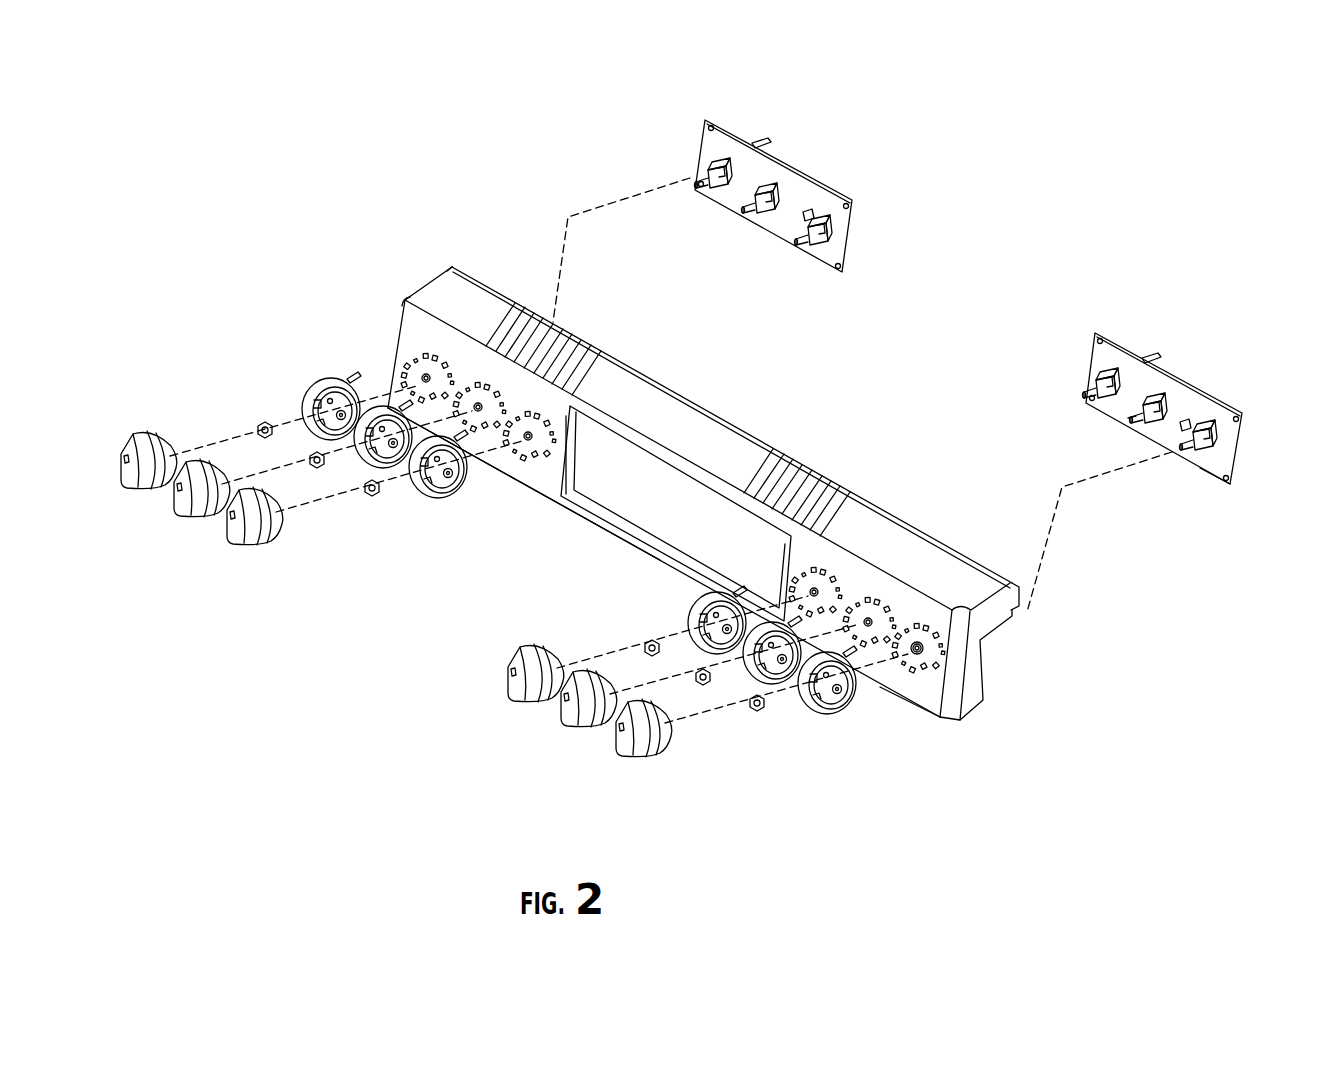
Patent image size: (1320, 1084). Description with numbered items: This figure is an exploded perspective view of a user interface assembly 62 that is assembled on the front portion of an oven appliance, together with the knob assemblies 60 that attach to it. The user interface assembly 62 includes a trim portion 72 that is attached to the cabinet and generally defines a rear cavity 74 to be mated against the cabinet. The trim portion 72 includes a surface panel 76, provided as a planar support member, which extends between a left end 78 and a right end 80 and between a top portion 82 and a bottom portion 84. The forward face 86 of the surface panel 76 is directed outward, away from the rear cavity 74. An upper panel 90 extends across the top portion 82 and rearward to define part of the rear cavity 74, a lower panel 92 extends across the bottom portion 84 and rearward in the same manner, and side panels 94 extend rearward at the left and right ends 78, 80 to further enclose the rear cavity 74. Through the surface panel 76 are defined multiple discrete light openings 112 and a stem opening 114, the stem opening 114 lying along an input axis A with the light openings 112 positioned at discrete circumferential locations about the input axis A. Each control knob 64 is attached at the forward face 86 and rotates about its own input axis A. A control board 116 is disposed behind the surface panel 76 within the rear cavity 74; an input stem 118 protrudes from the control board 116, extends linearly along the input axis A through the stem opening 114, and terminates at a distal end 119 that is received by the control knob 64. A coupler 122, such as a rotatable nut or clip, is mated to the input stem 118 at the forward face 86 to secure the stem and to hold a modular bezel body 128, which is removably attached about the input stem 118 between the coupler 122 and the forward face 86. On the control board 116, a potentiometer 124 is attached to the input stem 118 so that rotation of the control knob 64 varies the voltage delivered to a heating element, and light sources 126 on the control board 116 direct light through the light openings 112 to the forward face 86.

The knob assembly 60 is at (708, 704).
The user interface assembly 62 is at (1022, 256).
The control knob 64 is at (647, 756).
The trim portion 72 is at (447, 270).
The rear cavity 74 is at (622, 473).
The surface panel 76 is at (923, 697).
The left end 78 is at (378, 336).
The right end 80 is at (996, 697).
The top portion 82 is at (728, 480).
The bottom portion 84 is at (523, 506).
The forward face 86 is at (522, 402).
The upper panel 90 is at (843, 518).
The lower panel 92 is at (630, 528).
The side panel 94 is at (1000, 617).
The light opening 112 is at (878, 624).
The stem opening 114 is at (906, 634).
The control board 116 is at (748, 147).
The input stem 118 is at (1140, 400).
The distal end 119 is at (1120, 426).
The coupler 122 is at (700, 668).
The potentiometer 124 is at (1203, 472).
The light source 126 is at (1214, 418).
The modular bezel body 128 is at (846, 720).
The input axis A is at (788, 697).